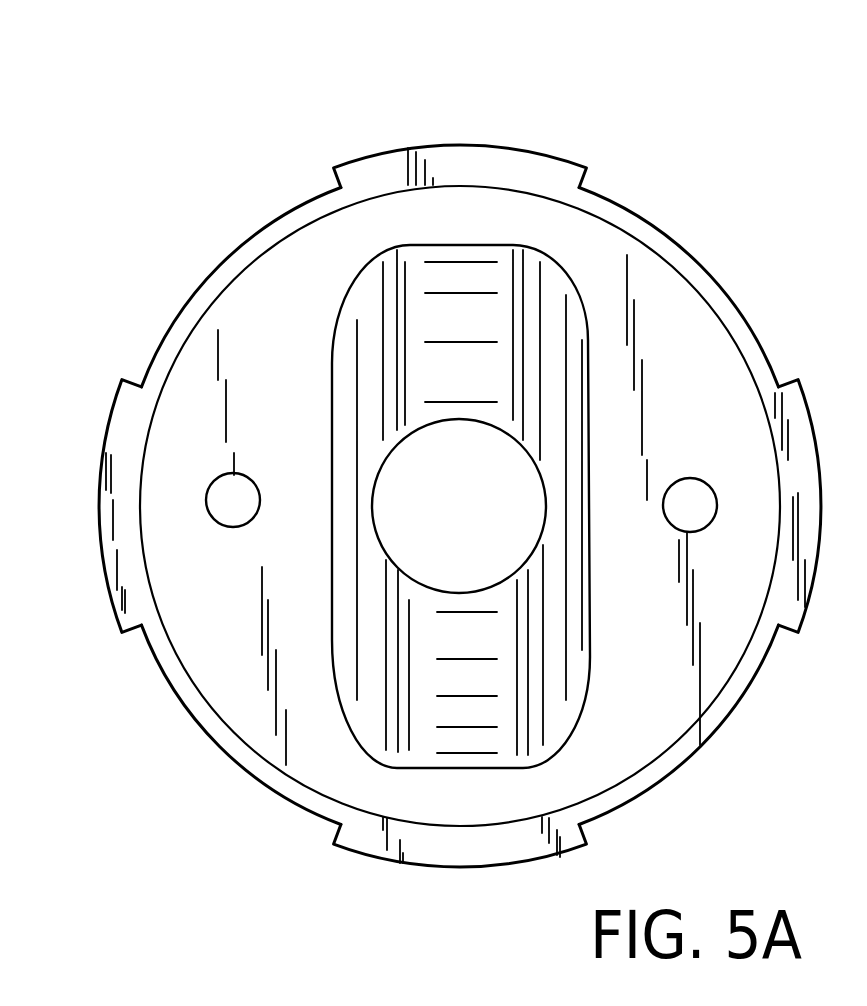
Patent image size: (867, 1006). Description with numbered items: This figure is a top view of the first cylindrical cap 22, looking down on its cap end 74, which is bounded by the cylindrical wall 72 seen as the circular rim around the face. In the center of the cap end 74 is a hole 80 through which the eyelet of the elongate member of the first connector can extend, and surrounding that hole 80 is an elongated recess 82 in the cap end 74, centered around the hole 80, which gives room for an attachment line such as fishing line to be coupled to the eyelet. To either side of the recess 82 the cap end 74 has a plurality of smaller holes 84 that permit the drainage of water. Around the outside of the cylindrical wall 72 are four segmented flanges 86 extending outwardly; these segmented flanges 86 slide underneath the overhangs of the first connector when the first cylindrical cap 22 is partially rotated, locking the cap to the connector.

The first cylindrical cap 22 is at (128, 124).
The cylindrical wall 72 is at (168, 326).
The cap end 74 is at (300, 256).
The hole 80 is at (490, 452).
The recess 82 is at (553, 308).
The holes 84 is at (688, 498).
The segmented flanges 86 is at (479, 153).